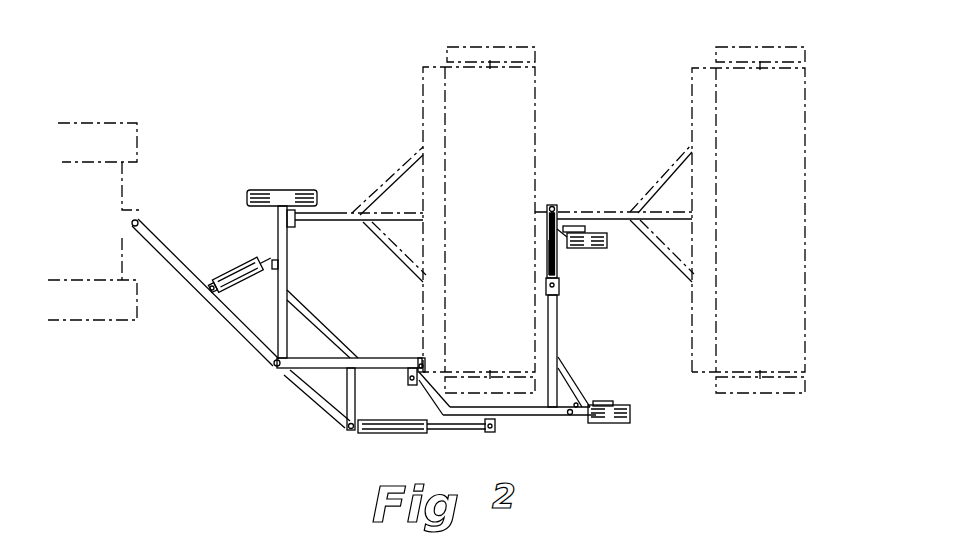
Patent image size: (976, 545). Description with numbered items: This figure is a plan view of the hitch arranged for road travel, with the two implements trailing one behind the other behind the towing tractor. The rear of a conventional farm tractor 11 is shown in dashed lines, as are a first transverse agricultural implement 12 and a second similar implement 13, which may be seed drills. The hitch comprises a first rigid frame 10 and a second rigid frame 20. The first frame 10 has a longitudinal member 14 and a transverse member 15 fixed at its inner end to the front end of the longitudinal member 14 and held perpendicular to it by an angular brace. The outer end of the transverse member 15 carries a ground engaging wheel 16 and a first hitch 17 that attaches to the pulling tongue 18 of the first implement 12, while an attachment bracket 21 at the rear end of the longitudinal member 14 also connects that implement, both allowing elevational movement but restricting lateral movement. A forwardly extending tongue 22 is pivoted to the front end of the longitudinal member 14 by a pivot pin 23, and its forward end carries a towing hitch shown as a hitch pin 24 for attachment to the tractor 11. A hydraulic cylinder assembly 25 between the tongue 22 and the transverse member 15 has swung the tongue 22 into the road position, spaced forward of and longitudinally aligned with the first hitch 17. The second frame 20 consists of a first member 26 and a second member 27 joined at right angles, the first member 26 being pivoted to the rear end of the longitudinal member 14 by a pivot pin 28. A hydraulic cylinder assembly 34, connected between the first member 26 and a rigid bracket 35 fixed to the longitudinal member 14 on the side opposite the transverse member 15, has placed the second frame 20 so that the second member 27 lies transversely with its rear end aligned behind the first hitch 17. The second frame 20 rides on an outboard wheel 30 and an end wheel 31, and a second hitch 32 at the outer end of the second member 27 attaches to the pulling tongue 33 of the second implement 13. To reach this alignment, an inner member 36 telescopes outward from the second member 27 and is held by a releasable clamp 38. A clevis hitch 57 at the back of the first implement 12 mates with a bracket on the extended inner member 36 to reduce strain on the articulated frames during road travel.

The first rigid frame 10 is at (232, 325).
The farm tractor 11 is at (108, 122).
The first transverse agricultural implement 12 is at (524, 132).
The second agricultural implement 13 is at (790, 213).
The longitudinal member 14 is at (402, 356).
The transverse member 15 is at (288, 268).
The ground engaging wheel 16 is at (292, 188).
The first hitch 17 is at (295, 224).
The pulling tongue 18 is at (365, 212).
The second rigid frame 20 is at (571, 416).
The attachment bracket 21 is at (426, 366).
The tongue 22 is at (212, 283).
The pivot pin 23 is at (275, 366).
The hitch pin 24 is at (140, 219).
The hydraulic cylinder assembly 25 is at (265, 262).
The first member 26 is at (537, 418).
The second member 27 is at (558, 347).
The pivot pin 28 is at (395, 387).
The outboard wheel 30 is at (632, 410).
The end wheel 31 is at (608, 241).
The second hitch 32 is at (560, 208).
The pulling tongue 33 is at (628, 206).
The hydraulic cylinder assembly 34 is at (405, 432).
The rigid bracket 35 is at (315, 394).
The inner member 36 is at (558, 268).
The releasable clamp 38 is at (559, 286).
The clevis hitch 57 is at (548, 205).